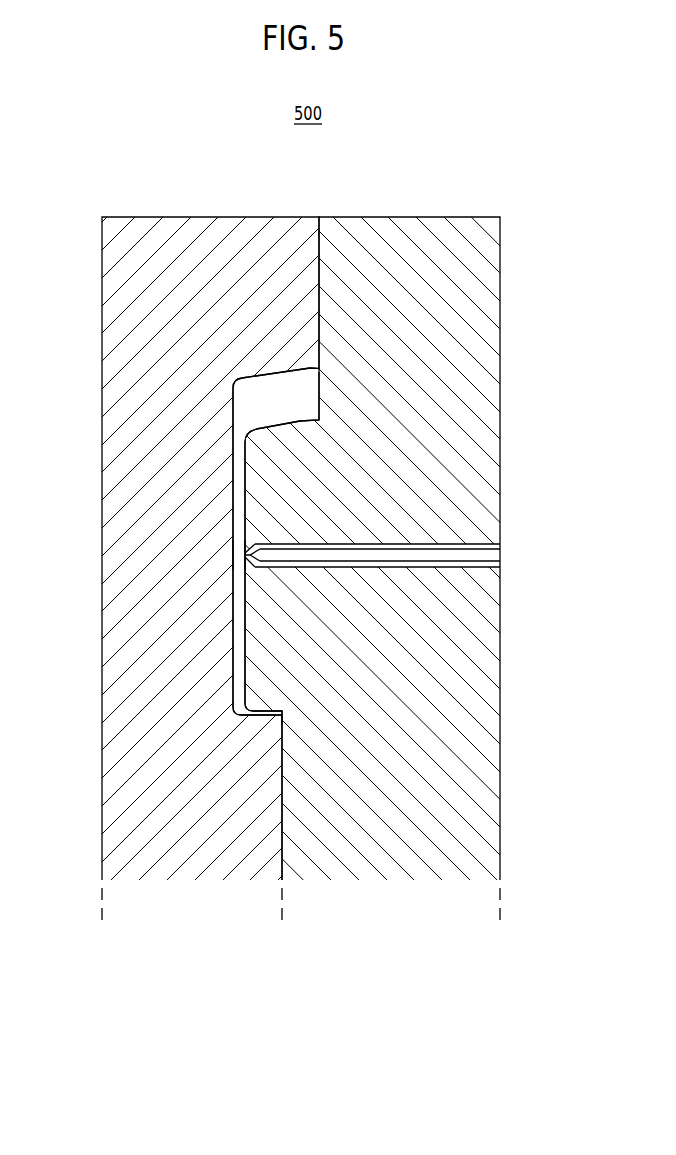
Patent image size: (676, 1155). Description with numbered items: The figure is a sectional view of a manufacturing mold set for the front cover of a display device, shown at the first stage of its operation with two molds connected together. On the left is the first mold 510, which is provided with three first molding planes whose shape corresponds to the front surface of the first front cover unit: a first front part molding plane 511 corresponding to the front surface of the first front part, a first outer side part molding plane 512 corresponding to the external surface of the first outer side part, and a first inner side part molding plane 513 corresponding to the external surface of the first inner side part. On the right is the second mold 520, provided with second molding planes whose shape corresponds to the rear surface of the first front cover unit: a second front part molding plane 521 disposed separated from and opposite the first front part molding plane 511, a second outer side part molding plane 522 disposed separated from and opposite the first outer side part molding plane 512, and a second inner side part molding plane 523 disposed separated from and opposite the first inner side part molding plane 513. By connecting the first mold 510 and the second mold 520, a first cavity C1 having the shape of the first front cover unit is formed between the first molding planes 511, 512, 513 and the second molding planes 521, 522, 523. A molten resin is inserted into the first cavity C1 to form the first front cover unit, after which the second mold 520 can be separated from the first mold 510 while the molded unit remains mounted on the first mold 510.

The first mold 510 is at (122, 310).
The first front part molding plane 511 is at (232, 447).
The first outer side part molding plane 512 is at (276, 373).
The first inner side part molding plane 513 is at (250, 714).
The second mold 520 is at (490, 313).
The second front part molding plane 521 is at (245, 613).
The second outer side part molding plane 522 is at (300, 420).
The second inner side part molding plane 523 is at (285, 721).
The first cavity C1 is at (238, 562).